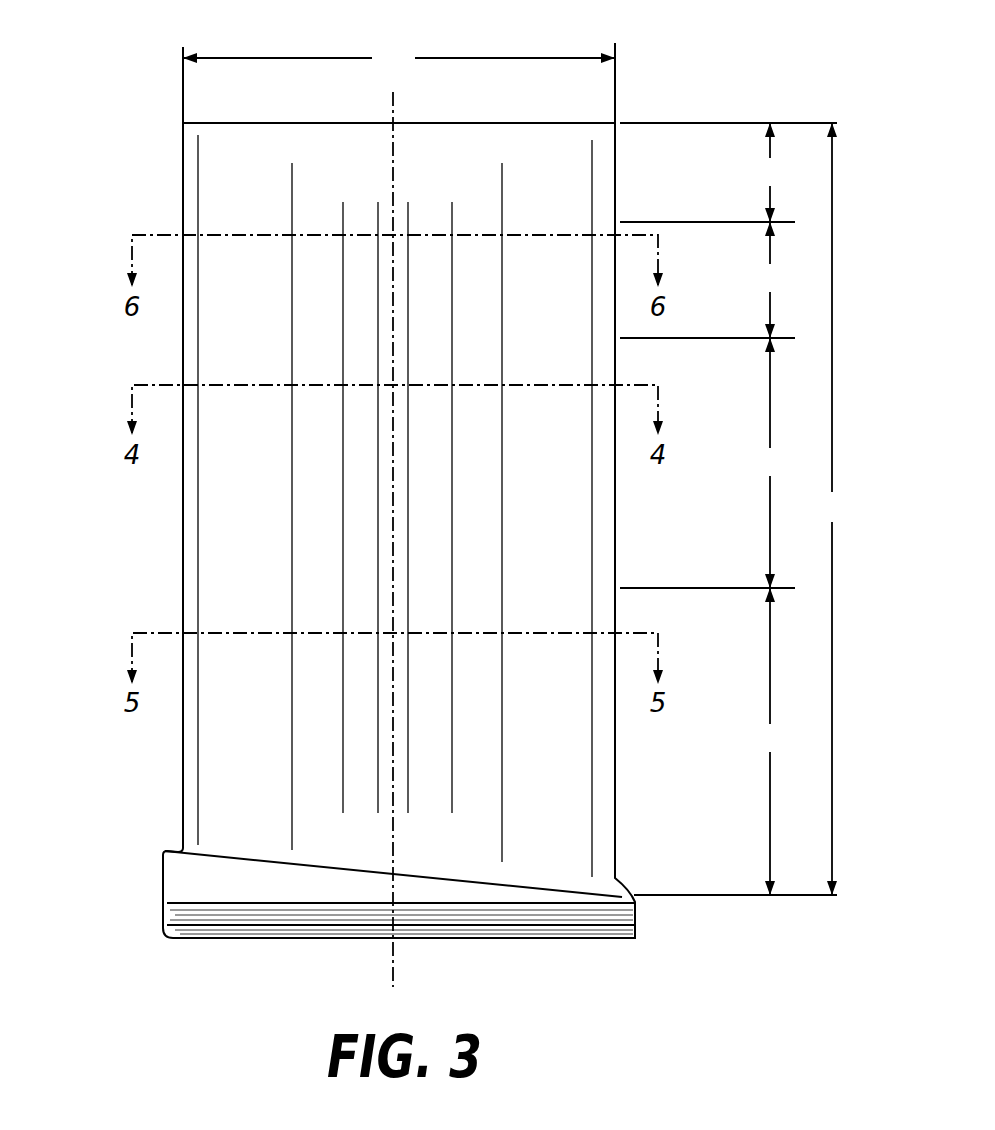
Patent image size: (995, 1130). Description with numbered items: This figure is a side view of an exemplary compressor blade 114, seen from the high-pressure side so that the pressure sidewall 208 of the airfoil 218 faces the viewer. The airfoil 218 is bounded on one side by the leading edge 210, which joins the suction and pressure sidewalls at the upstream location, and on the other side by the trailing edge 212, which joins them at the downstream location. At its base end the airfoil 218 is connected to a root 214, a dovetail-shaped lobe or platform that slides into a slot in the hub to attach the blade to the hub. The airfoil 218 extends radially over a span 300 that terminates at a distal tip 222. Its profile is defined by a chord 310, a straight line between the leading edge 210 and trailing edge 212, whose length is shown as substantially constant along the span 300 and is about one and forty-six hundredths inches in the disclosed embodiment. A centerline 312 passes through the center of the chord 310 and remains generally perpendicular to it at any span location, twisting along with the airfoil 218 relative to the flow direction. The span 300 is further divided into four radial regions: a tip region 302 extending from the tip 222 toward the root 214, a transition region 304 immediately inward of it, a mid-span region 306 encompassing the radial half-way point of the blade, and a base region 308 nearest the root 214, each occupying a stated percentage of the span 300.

The compressor blade 114 is at (100, 54).
The pressure sidewall 208 is at (482, 563).
The leading edge 210 is at (615, 815).
The trailing edge 212 is at (190, 590).
The root 214 is at (636, 912).
The airfoil 218 is at (70, 500).
The tip 222 is at (185, 123).
The span 300 is at (832, 509).
The tip region 302 is at (770, 172).
The transition region 304 is at (770, 280).
The mid-span region 306 is at (770, 463).
The base region 308 is at (770, 741).
The chord 310 is at (399, 58).
The centerline 312 is at (393, 148).